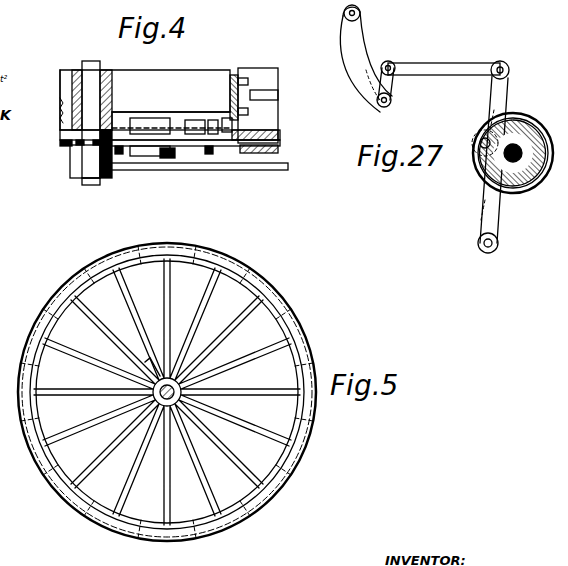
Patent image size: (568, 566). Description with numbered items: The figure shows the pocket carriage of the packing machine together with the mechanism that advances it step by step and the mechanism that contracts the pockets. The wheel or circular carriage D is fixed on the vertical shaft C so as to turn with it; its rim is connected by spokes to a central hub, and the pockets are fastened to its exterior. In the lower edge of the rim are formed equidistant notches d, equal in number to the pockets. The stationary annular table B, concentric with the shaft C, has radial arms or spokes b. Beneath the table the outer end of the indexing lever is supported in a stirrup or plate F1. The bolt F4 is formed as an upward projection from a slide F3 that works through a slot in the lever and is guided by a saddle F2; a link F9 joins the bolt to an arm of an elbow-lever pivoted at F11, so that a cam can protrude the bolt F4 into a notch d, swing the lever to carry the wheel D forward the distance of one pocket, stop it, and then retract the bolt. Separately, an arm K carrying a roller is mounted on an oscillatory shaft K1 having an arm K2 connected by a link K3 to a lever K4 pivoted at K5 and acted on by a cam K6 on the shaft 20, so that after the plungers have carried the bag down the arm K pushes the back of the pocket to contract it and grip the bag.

In FIG. 4, the wheel or circular carriage D is at (135, 100).
In FIG. 5, the wheel or circular carriage D is at (78, 268).
In FIG. 4, the notches d is at (232, 125).
In FIG. 5, the notches d is at (294, 418).
In FIG. 4, the vertical shaft C is at (91, 60).
In FIG. 4, the stationary horizontal table B is at (60, 134).
In FIG. 4, the radial arms or spokes b is at (72, 145).
In FIG. 4, the stirrup or plate F1 is at (264, 95).
In FIG. 4, the saddle F2 is at (205, 112).
In FIG. 4, the slide F3 is at (185, 134).
In FIG. 4, the bolt F4 is at (216, 134).
In FIG. 4, the link F9 is at (280, 153).
In FIG. 4, the pivot of elbow-lever F11 is at (280, 155).
In FIG. 27, the arm K is at (362, 30).
In FIG. 27, the oscillatory shaft K1 is at (383, 107).
In FIG. 27, the arm K2 is at (395, 94).
In FIG. 27, the link K3 is at (456, 66).
In FIG. 27, the lever K4 is at (515, 82).
In FIG. 27, the pivot K5 is at (498, 246).
In FIG. 27, the cam K6 is at (522, 180).
In FIG. 27, the shaft 20 is at (522, 145).